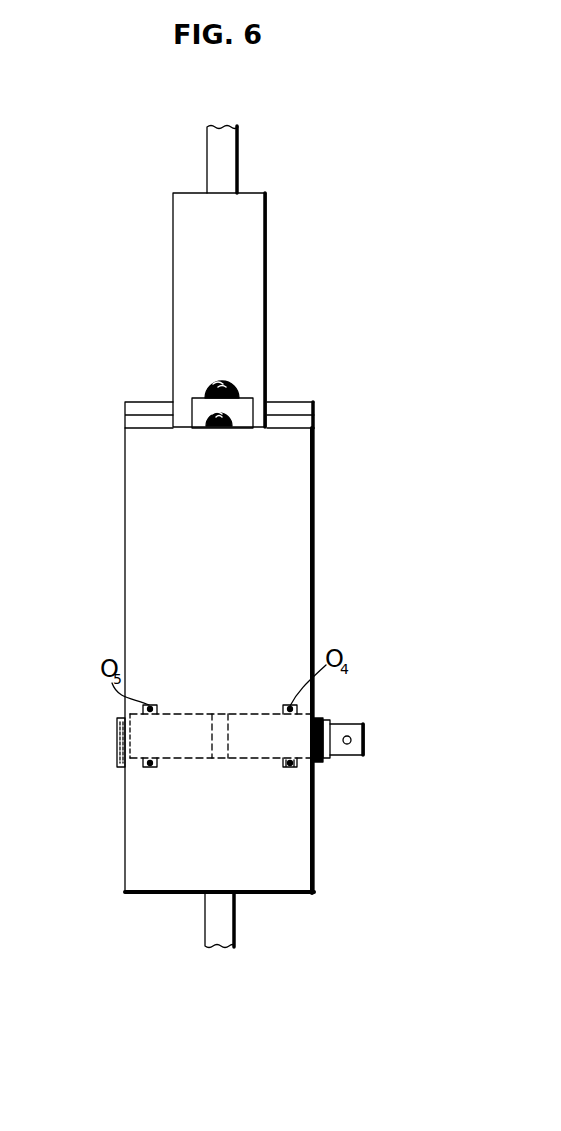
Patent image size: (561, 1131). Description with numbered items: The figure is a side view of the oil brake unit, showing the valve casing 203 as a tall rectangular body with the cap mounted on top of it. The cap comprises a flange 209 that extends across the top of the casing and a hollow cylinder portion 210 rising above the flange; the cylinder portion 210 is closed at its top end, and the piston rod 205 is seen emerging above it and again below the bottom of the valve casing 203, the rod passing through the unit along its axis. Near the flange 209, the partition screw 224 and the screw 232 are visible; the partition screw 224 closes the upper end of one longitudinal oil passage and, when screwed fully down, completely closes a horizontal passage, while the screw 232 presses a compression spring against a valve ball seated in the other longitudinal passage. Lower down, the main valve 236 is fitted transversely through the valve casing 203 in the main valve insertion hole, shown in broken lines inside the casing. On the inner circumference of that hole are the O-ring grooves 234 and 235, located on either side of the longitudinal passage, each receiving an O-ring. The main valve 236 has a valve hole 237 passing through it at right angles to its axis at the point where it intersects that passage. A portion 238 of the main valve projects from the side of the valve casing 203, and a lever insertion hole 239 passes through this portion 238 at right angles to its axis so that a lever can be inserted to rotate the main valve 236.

The piston rod 205 is at (232, 157).
The hollow cylinder portion 210 is at (257, 257).
The flange 209 is at (300, 408).
The screw 232 is at (230, 421).
The partition screw 224 is at (232, 382).
The valve casing 203 is at (296, 531).
The valve hole 237 is at (218, 717).
The main valve 236 is at (260, 756).
The O-ring groove 234 is at (294, 705).
The O-ring groove 235 is at (148, 768).
The projecting portion 238 is at (345, 731).
The lever insertion hole 239 is at (352, 740).